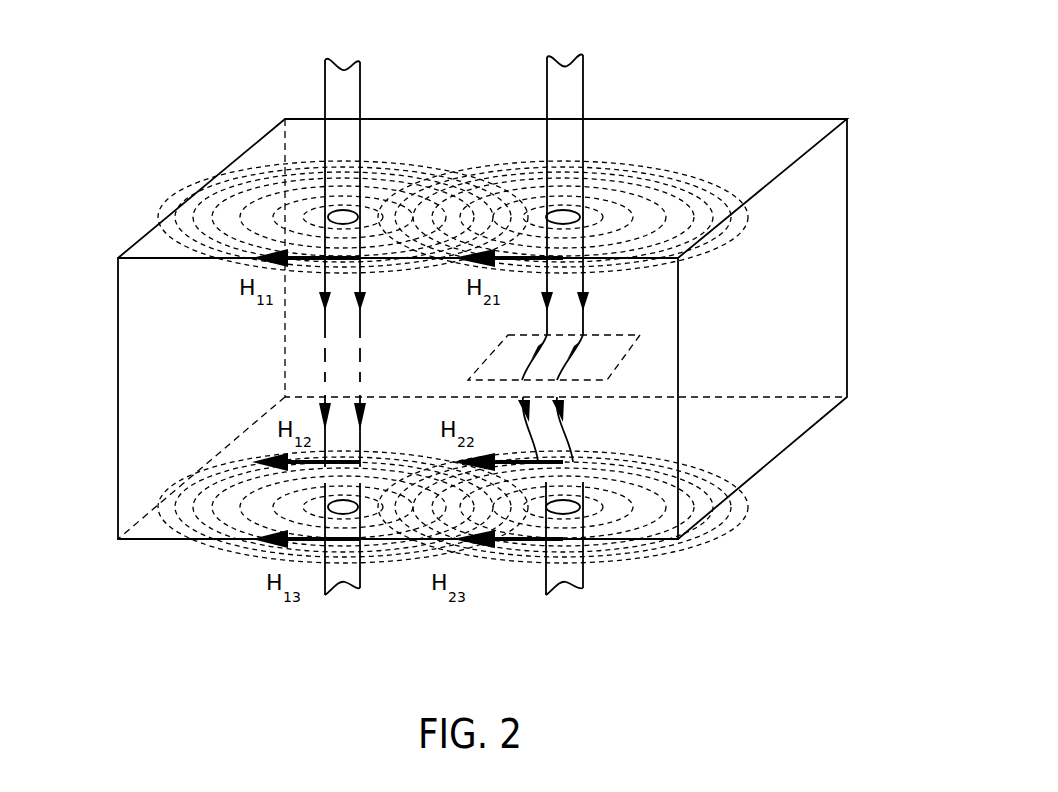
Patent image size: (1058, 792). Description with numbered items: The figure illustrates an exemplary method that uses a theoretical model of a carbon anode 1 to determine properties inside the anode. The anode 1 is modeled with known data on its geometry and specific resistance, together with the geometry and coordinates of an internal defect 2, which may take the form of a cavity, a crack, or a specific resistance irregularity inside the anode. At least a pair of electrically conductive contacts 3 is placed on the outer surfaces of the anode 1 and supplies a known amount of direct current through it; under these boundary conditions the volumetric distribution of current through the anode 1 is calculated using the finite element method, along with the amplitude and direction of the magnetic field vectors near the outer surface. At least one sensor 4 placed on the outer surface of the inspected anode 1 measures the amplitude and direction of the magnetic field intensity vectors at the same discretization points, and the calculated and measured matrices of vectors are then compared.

The carbon anode 1 is at (146, 248).
The internal defect 2 is at (622, 342).
The electrically conductive contacts 3 is at (563, 212).
The sensor 4 is at (567, 513).